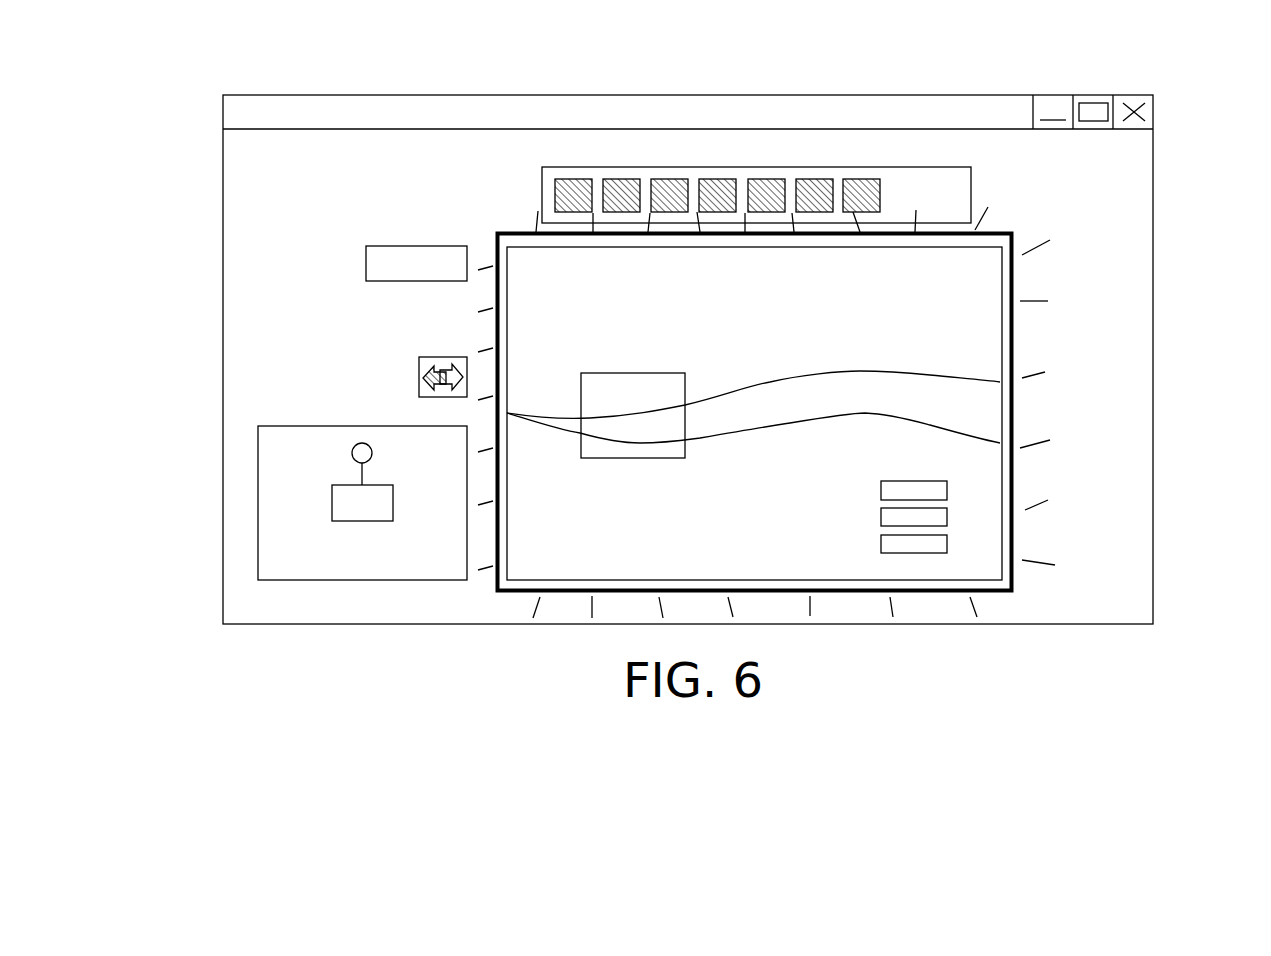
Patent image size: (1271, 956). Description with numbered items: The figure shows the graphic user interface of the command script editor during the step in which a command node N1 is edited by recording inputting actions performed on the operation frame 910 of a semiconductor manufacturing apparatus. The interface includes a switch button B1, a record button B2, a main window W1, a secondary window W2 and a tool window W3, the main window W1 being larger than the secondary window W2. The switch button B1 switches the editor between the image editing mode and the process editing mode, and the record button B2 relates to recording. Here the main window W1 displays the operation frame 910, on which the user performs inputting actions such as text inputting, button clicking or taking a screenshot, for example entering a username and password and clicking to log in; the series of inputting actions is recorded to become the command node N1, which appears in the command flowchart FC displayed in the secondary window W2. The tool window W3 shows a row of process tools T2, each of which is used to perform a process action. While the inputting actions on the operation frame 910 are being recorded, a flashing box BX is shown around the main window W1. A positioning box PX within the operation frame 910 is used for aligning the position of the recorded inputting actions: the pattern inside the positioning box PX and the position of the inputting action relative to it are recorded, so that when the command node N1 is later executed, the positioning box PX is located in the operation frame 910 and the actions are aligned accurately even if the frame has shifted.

The operation frame 910 is at (958, 320).
The main window W1 is at (741, 312).
The secondary window W2 is at (301, 467).
The tool window W3 is at (756, 134).
The process tool T2 is at (765, 178).
The flashing box BX is at (997, 230).
The switch button B1 is at (418, 376).
The record button B2 is at (415, 283).
The command flowchart FC is at (303, 483).
The command node N1 is at (362, 482).
The positioning box PX is at (633, 372).